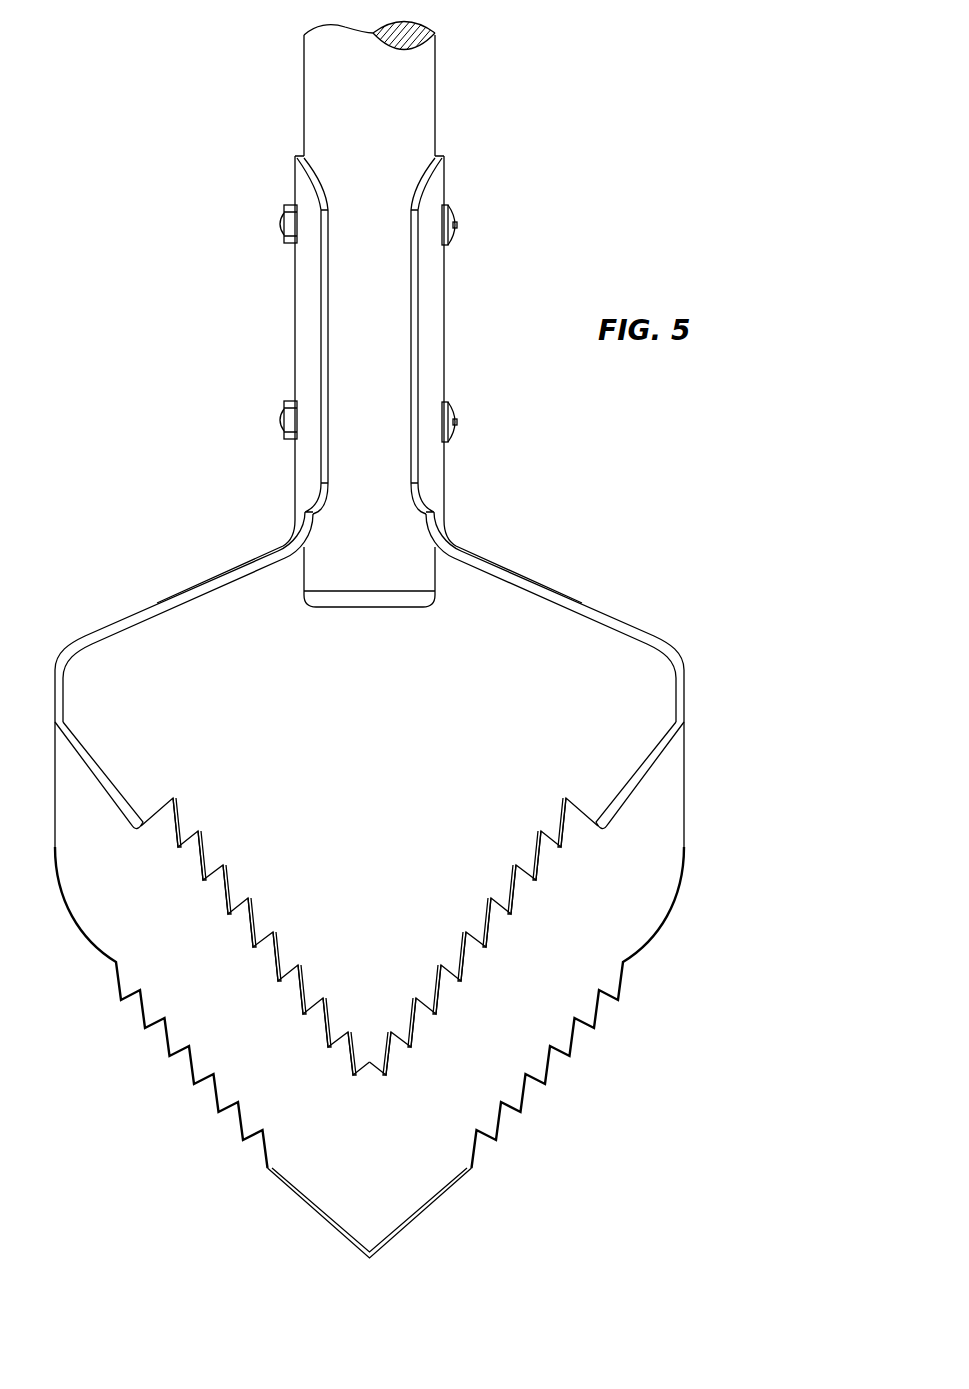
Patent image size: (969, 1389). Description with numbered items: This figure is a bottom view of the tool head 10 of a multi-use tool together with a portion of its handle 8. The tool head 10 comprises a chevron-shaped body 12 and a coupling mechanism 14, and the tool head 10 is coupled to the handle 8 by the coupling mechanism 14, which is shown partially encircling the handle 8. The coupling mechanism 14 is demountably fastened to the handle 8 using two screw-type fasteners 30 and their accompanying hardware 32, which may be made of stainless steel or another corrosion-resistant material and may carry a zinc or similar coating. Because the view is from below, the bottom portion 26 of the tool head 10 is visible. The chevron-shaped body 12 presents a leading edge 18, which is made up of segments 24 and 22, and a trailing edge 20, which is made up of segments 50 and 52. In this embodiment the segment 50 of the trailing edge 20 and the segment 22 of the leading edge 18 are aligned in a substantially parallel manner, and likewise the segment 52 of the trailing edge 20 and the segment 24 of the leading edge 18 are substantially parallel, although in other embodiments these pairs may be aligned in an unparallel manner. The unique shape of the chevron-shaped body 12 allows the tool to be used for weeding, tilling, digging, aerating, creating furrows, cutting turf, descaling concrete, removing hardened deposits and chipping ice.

The handle 8 is at (405, 98).
The tool head 10 is at (600, 160).
The chevron-shaped body 12 is at (622, 595).
The coupling mechanism 14 is at (445, 320).
The leading edge 18 is at (452, 1213).
The trailing edge 20 is at (465, 912).
The segment of leading edge 22 is at (525, 1093).
The segment of leading edge 24 is at (215, 1092).
The bottom portion 26 is at (381, 1177).
The screw-type fasteners 30 is at (458, 213).
The accompanying hardware 32 is at (283, 210).
The segment of trailing edge 50 is at (490, 898).
The segment of trailing edge 52 is at (250, 898).